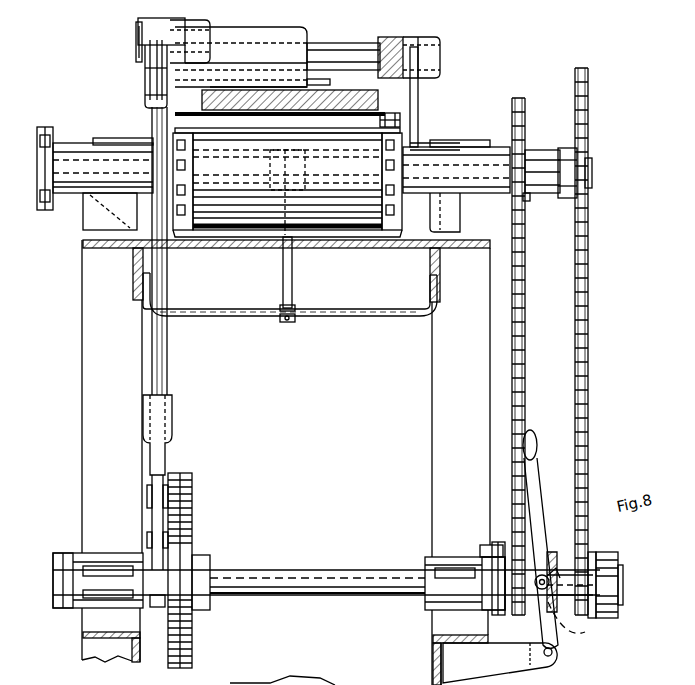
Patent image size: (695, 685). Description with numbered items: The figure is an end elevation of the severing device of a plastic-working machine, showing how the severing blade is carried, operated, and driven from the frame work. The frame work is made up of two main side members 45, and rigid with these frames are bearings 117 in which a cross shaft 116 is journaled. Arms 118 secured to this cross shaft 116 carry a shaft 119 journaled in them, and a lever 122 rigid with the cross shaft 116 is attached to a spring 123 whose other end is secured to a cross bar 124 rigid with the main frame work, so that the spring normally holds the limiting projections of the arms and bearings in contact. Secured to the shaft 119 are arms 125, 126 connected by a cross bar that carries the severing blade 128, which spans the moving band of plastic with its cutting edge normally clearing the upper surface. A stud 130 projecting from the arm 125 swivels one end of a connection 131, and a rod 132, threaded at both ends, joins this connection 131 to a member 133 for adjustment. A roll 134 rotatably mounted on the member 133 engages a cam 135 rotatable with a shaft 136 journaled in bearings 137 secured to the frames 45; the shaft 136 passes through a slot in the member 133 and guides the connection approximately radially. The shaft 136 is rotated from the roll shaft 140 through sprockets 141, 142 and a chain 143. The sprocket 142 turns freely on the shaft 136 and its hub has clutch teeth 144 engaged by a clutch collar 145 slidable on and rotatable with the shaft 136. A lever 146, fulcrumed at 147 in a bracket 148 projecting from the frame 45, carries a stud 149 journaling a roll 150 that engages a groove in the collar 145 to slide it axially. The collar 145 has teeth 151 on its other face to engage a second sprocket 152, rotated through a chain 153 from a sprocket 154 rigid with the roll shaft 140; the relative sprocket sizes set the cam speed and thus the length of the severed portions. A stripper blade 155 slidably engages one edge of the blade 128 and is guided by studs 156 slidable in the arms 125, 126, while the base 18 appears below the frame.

The base 18 is at (335, 684).
The main side member 45 is at (88, 456).
The cross shaft 116 is at (405, 124).
The bearing 117 is at (110, 140).
The arm 118 is at (420, 95).
The shaft 119 is at (365, 42).
The lever 122 is at (292, 268).
The spring 123 is at (297, 308).
The cross bar 124 is at (360, 312).
The arm 125 is at (186, 17).
The arm 126 is at (392, 40).
The blade 128 is at (300, 77).
The stud 130 is at (136, 30).
The connection 131 is at (147, 17).
The rod 132 is at (168, 260).
The member 133 is at (170, 443).
The roll 134 is at (180, 458).
The cam 135 is at (185, 525).
The shaft 136 is at (285, 572).
The bearing 137 is at (101, 553).
The roll shaft 140 is at (542, 165).
The sprocket 141 is at (528, 199).
The sprocket 142 is at (500, 542).
The chain 143 is at (522, 290).
The clutch teeth 144 is at (533, 553).
The clutch collar 145 is at (545, 572).
The lever 146 is at (532, 500).
The fulcrum 147 is at (553, 653).
The bracket 148 is at (510, 665).
The stud 149 is at (547, 580).
The roll 150 is at (581, 624).
The teeth 151 is at (600, 556).
The sprocket 152 is at (570, 588).
The chain 153 is at (588, 458).
The sprocket 154 is at (572, 158).
The stripper blade 155 is at (331, 82).
The stud 156 is at (200, 65).